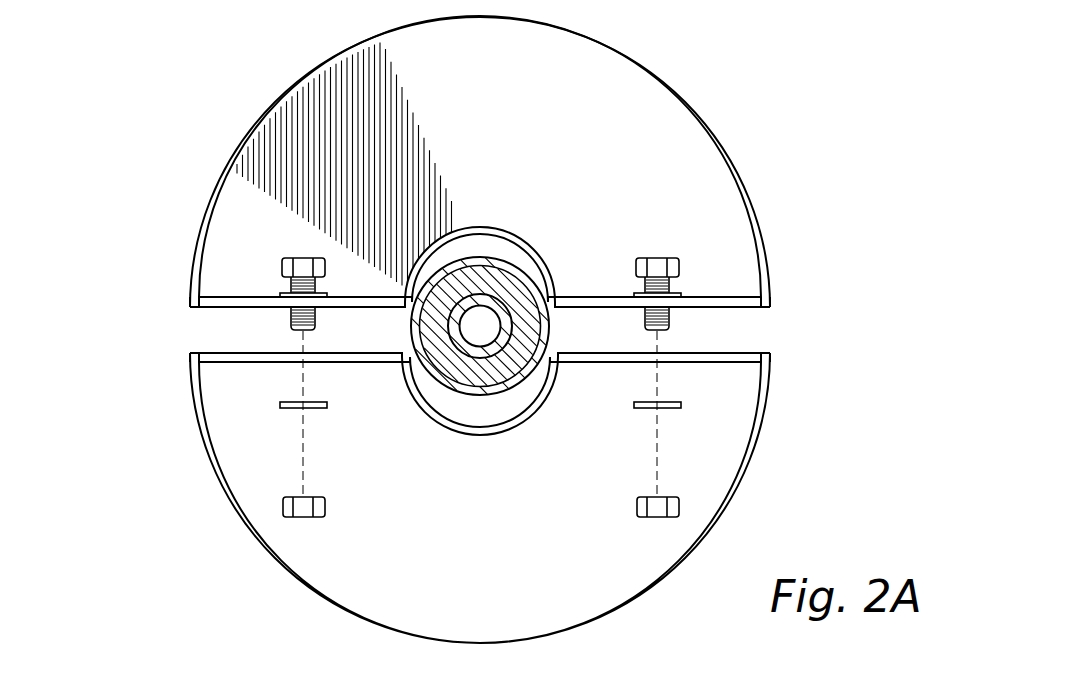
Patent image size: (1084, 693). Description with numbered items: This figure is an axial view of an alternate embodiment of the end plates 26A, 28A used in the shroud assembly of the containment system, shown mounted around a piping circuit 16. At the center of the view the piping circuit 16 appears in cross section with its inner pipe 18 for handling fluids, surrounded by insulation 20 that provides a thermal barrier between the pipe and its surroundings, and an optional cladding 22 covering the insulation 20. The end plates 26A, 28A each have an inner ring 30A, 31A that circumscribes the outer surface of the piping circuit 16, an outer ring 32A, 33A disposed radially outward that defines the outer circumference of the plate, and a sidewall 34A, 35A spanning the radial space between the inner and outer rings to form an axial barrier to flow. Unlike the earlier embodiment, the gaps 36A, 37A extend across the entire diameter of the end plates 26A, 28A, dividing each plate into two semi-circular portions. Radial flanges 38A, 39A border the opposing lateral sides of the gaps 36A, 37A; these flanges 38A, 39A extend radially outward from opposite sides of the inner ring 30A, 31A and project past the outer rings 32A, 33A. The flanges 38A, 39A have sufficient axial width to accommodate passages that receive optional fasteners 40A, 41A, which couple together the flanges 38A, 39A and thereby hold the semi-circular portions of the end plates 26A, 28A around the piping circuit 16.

The piping circuit 16 is at (453, 298).
The inner pipe 18 is at (475, 357).
The insulation 20 is at (445, 378).
The cladding 22 is at (424, 376).
The end plate 26A is at (464, 161).
The end plate 28A is at (464, 161).
The inner ring 30A is at (533, 253).
The inner ring 31A is at (522, 236).
The outer ring 32A is at (480, 162).
The outer ring 33A is at (621, 50).
The sidewall 34A is at (522, 156).
The sidewall 35A is at (668, 133).
The gap 36A is at (498, 478).
The gap 37A is at (498, 478).
The radial flange 38A is at (416, 340).
The radial flange 39A is at (213, 352).
The fastener 40A is at (586, 368).
The fastener 41A is at (694, 260).